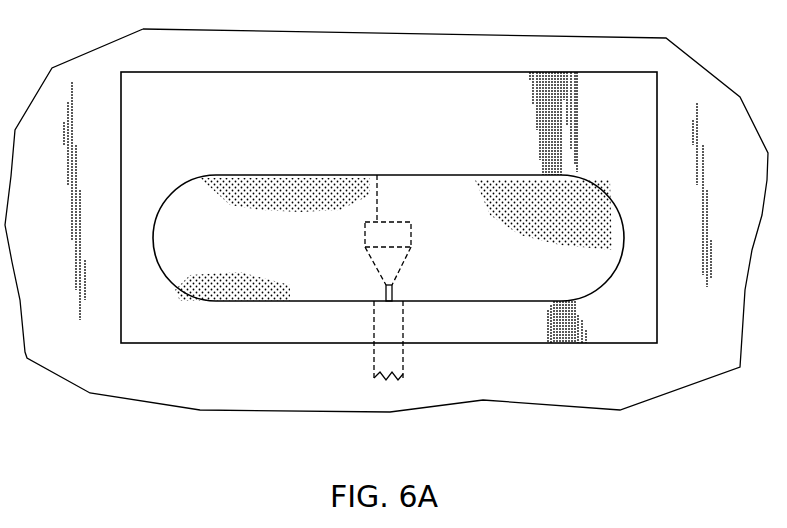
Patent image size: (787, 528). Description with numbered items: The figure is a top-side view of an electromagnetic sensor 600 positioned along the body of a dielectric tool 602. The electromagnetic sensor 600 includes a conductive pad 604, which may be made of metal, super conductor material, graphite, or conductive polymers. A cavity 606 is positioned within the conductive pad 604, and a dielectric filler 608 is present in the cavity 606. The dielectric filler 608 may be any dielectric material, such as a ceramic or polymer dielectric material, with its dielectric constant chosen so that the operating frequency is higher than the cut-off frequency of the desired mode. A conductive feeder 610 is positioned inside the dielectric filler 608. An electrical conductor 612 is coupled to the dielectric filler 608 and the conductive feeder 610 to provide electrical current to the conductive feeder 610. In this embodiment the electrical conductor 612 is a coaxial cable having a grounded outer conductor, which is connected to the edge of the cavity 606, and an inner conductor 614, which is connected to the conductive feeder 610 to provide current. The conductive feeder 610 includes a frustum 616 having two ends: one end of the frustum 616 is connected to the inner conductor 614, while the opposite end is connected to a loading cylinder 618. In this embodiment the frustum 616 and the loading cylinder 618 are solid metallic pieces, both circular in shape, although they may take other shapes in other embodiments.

The electromagnetic sensor 600 is at (105, 45).
The dielectric tool 602 is at (727, 338).
The conductive pad 604 is at (258, 118).
The cavity 606 is at (210, 176).
The dielectric filler 608 is at (565, 216).
The conductive feeder 610 is at (407, 195).
The electrical conductor 612 is at (372, 358).
The inner conductor 614 is at (393, 291).
The frustum 616 is at (372, 262).
The loading cylinder 618 is at (377, 175).